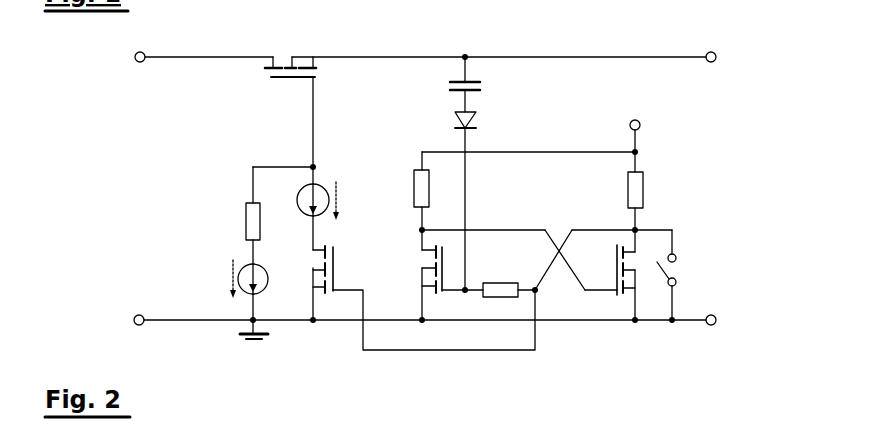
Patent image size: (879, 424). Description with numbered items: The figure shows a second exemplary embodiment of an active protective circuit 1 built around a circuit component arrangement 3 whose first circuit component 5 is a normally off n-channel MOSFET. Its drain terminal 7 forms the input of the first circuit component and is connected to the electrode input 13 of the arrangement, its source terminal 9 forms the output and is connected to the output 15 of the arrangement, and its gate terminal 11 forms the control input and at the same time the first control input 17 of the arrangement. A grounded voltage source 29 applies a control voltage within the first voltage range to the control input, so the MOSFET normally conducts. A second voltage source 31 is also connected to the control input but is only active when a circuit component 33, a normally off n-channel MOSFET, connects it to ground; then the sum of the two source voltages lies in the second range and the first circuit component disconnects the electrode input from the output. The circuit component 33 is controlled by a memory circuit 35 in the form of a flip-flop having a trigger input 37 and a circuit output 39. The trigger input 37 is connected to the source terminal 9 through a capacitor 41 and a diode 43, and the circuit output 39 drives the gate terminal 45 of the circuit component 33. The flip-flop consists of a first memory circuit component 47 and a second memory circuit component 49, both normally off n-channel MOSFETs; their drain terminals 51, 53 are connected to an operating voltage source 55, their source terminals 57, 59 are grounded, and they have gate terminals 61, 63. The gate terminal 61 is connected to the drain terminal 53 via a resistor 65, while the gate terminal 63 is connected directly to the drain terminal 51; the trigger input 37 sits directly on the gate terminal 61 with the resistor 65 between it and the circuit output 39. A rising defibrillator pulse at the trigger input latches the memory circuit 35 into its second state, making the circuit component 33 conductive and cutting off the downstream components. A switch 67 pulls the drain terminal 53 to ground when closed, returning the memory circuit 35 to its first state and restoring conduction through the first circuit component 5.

The active protective circuit 1 is at (195, 91).
The circuit component arrangement 3 is at (298, 93).
The first circuit component 5 is at (258, 92).
The drain terminal 7 is at (184, 31).
The electrode input 13 is at (140, 52).
The source terminal 9 is at (463, 55).
The gate terminal 11 is at (336, 124).
The first control input 17 is at (315, 165).
The output 15 is at (718, 57).
The voltage source 29 is at (237, 281).
The second voltage source 31 is at (330, 200).
The circuit component 33 is at (342, 256).
The trigger input 37 is at (467, 143).
The capacitor 41 is at (478, 83).
The diode 43 is at (455, 118).
The gate terminal 45 is at (363, 291).
The first memory circuit component 47 is at (412, 262).
The second memory circuit component 49 is at (648, 258).
The drain terminal 51 is at (425, 228).
The drain terminal 53 is at (640, 228).
The operating voltage source 55 is at (640, 125).
The source terminal 57 is at (423, 322).
The source terminal 59 is at (637, 322).
The gate terminal 61 is at (466, 288).
The gate terminal 63 is at (585, 288).
The resistor 65 is at (500, 298).
The switch 67 is at (676, 283).
The memory circuit 35 is at (667, 185).
The circuit output 39 is at (535, 290).